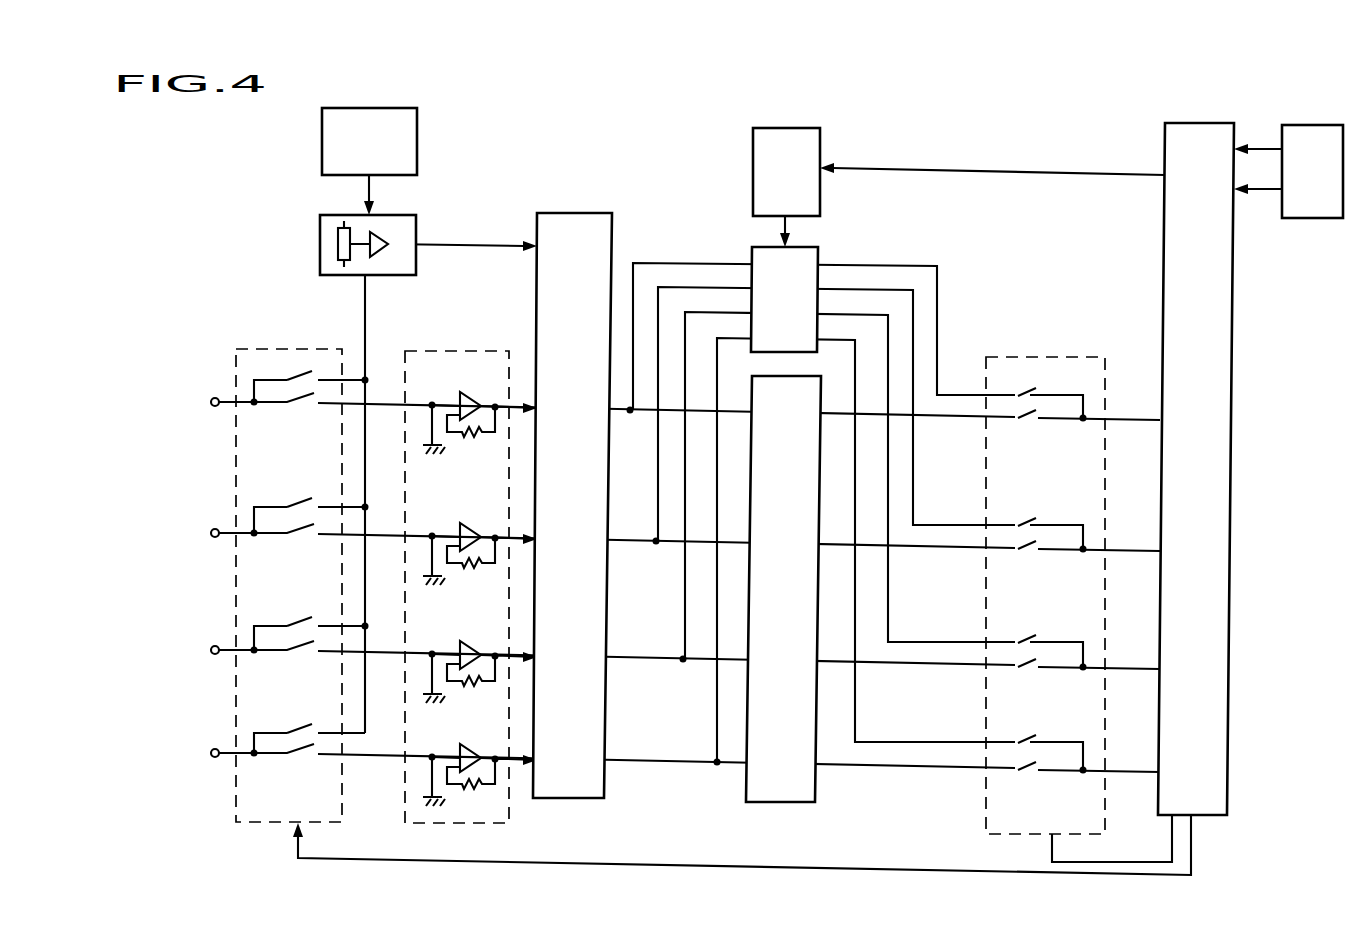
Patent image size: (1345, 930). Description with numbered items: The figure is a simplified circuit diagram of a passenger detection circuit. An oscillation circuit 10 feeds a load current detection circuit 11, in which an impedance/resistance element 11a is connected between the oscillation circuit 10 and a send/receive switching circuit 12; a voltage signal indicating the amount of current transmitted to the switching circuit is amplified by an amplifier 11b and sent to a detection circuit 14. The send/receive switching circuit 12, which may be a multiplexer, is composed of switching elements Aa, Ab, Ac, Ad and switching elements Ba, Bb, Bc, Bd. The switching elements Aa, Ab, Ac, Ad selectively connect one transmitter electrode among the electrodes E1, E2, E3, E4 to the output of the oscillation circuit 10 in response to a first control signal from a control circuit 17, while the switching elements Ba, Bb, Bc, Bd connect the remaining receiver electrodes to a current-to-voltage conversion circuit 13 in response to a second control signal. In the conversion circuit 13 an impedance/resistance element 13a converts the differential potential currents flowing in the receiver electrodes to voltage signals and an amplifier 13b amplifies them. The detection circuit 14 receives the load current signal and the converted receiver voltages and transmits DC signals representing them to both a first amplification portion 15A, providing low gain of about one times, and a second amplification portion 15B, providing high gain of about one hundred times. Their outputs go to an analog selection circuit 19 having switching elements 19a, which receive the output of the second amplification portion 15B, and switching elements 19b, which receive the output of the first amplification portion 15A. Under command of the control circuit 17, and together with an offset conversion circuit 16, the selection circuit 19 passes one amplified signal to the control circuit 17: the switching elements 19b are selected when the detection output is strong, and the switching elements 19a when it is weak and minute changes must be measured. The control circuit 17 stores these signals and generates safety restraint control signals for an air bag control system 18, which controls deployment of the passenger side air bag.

The oscillation circuit 10 is at (322, 137).
The load current detection circuit 11 is at (320, 247).
The impedance/resistance element 11a is at (338, 250).
The amplifier 11b is at (385, 238).
The send/receive switching circuit 12 is at (275, 348).
The current-to-voltage conversion circuit 13 is at (443, 350).
The impedance/resistance element 13a is at (432, 435).
The amplifier 13b is at (482, 382).
The detection circuit 14 is at (568, 213).
The first amplification portion 15A is at (782, 802).
The second amplification portion 15B is at (757, 247).
The offset conversion circuit 16 is at (787, 128).
The control circuit 17 is at (1185, 123).
The air bag control system 18 is at (1310, 125).
The analog selection circuit 19 is at (1060, 357).
The switching elements 19a is at (1046, 373).
The switching elements 19b is at (1033, 414).
The electrode E1 is at (210, 402).
The electrode E2 is at (210, 533).
The electrode E3 is at (210, 650).
The electrode E4 is at (210, 753).
The switching element Aa is at (303, 375).
The switching element Ab is at (303, 502).
The switching element Ac is at (303, 621).
The switching element Ad is at (305, 728).
The switching element Ba is at (302, 398).
The switching element Bb is at (302, 529).
The switching element Bc is at (302, 646).
The switching element Bd is at (302, 749).